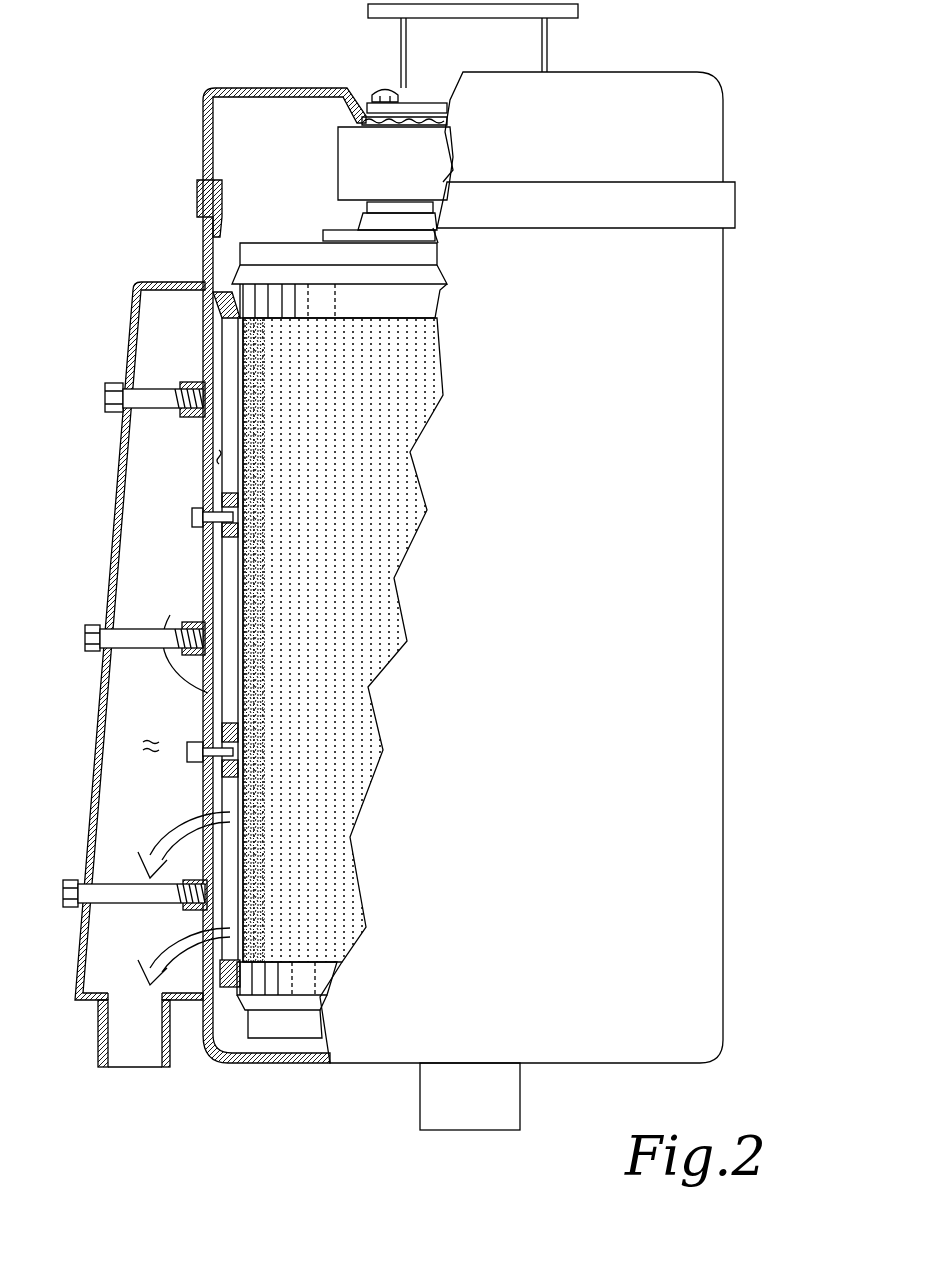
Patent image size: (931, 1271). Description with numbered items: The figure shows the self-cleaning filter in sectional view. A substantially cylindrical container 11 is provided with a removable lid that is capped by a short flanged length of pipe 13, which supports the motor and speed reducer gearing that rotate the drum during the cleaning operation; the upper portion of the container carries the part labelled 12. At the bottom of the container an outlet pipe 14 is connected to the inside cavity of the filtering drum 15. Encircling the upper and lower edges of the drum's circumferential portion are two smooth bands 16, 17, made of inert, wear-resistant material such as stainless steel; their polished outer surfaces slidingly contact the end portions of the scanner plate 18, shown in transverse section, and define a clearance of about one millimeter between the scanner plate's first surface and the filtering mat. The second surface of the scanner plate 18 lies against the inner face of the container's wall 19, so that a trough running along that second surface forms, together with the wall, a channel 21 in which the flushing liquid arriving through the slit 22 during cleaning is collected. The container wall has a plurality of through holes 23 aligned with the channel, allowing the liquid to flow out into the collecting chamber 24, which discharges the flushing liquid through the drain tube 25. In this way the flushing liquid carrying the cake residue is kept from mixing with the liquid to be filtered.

The container 11 is at (698, 945).
The tank cap 12 is at (700, 118).
The flanged length of pipe 13 is at (420, 52).
The outlet pipe 14 is at (433, 1090).
The filtering drum 15 is at (383, 504).
The smooth band 16 is at (412, 302).
The smooth band 17 is at (322, 978).
The scanner plate 18 is at (227, 292).
The container's wall 19 is at (207, 542).
The channel 21 is at (217, 455).
The slit 22 is at (230, 358).
The through holes 23 is at (207, 575).
The collecting chamber 24 is at (143, 732).
The drain tube 25 is at (157, 1067).